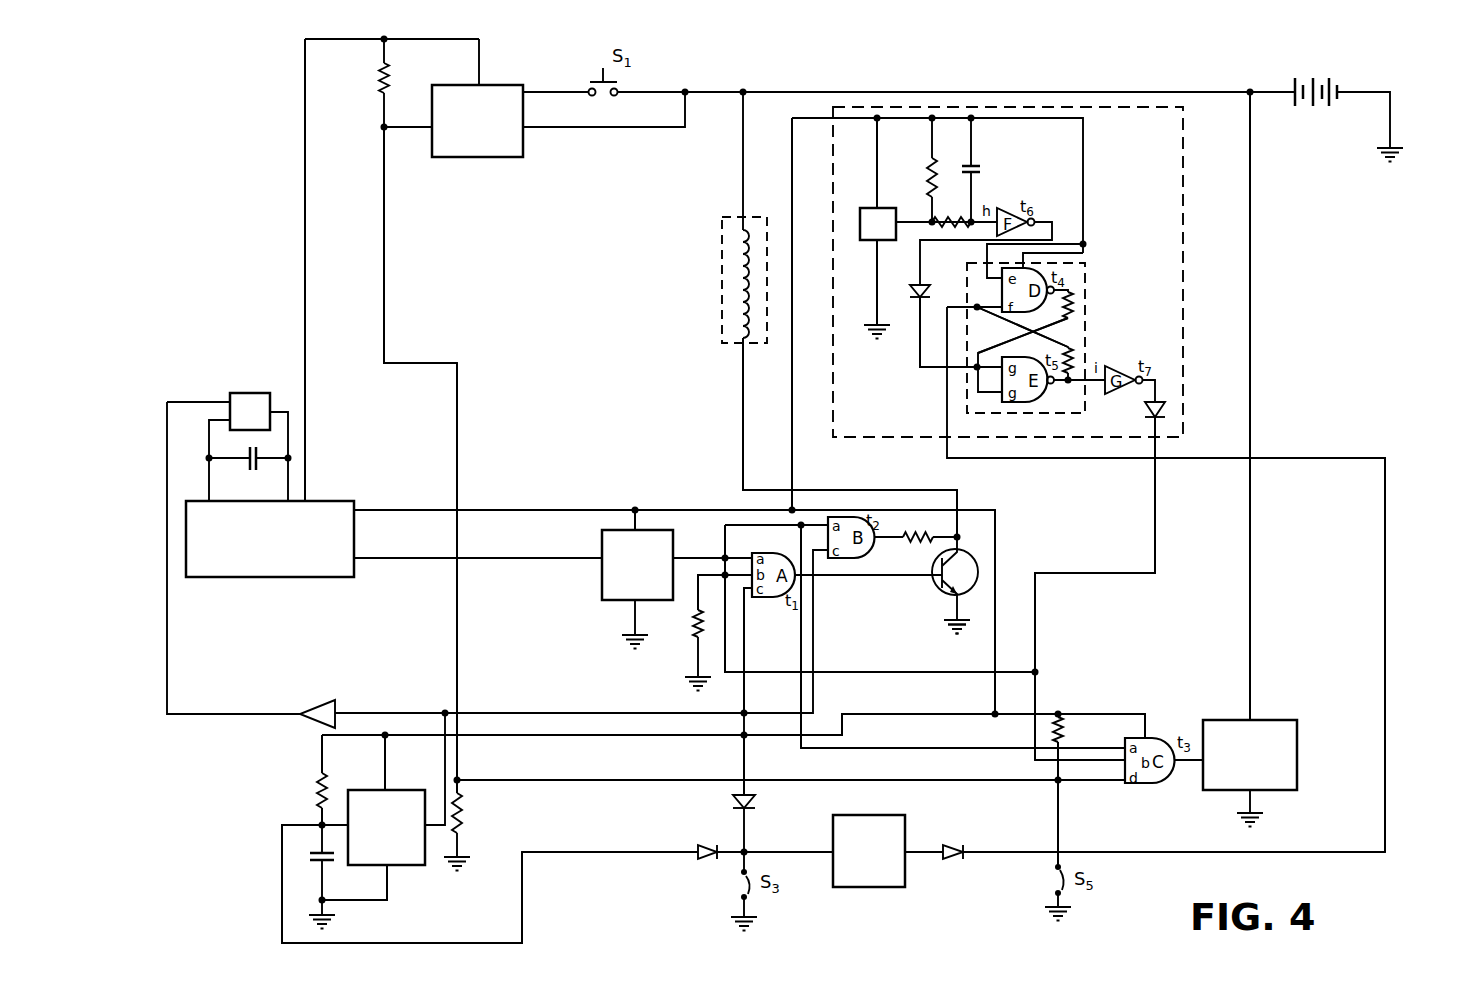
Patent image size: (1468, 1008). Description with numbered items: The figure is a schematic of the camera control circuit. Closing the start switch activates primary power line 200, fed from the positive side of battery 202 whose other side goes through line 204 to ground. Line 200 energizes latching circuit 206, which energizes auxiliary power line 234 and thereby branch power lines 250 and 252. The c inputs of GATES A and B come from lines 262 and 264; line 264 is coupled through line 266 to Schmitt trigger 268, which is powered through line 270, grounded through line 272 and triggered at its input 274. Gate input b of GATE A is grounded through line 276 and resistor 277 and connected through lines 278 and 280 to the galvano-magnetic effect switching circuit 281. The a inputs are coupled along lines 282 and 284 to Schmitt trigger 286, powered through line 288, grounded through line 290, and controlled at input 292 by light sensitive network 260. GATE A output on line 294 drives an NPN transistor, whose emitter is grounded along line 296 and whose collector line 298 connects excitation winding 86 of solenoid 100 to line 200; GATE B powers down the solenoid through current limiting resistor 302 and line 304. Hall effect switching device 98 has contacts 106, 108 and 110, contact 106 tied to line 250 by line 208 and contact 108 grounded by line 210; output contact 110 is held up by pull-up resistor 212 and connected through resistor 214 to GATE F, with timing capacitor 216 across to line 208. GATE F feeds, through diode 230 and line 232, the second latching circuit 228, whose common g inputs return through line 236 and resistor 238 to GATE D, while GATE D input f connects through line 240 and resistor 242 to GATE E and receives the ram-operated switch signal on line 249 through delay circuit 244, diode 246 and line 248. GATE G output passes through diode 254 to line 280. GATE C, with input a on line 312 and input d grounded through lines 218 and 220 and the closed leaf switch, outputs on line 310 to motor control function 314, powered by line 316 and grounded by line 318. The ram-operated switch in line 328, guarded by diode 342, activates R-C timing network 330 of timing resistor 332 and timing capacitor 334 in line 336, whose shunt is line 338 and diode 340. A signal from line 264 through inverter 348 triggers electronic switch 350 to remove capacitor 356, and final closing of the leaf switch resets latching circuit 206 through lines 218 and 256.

The excitation winding 86 is at (743, 300).
The Hall effect switching device 98 is at (860, 222).
The solenoid 100 is at (722, 230).
The input contact 106 is at (877, 192).
The input contact 108 is at (877, 250).
The output contact 110 is at (910, 222).
The primary power line 200 is at (988, 92).
The battery 202 is at (1320, 72).
The line 204 is at (1390, 120).
The latching circuit 206 is at (490, 157).
The interconnecting line 208 is at (792, 380).
The interconnecting line 210 is at (877, 288).
The pull-up resistor 212 is at (930, 166).
The resistor 214 is at (950, 215).
The timing capacitor 216 is at (980, 165).
The line 218 is at (575, 780).
The line 220 is at (1058, 815).
The second latching circuit 228 is at (1094, 289).
The diode 230 is at (928, 288).
The line 232 is at (920, 350).
The auxiliary power line 234 is at (305, 312).
The line 236 is at (1012, 338).
The resistor 238 is at (1076, 302).
The line 240 is at (1060, 343).
The resistor 242 is at (1075, 375).
The delay circuit 244 is at (878, 815).
The diode 246 is at (958, 842).
The interconnecting line 248 is at (1165, 852).
The line 249 is at (787, 850).
The branch power line 250 is at (510, 510).
The branch power line 252 is at (895, 714).
The diode 254 is at (1165, 410).
The line 256 is at (384, 280).
The light sensitive exposure control network 260 is at (268, 577).
The line 262 is at (744, 635).
The line 264 is at (760, 713).
The line 266 is at (457, 768).
The Schmitt trigger 268 is at (380, 788).
The line 270 is at (385, 770).
The line 272 is at (387, 882).
The input 274 is at (336, 823).
The line 276 is at (698, 595).
The resistor 277 is at (693, 640).
The line 278 is at (825, 672).
The line 280 is at (1078, 573).
The galvano-magnetic effect switching circuit 281 is at (1196, 268).
The line 282 is at (745, 525).
The line 284 is at (695, 558).
The Schmitt trigger 286 is at (602, 588).
The line 288 is at (635, 510).
The line 290 is at (624, 628).
The input 292 is at (530, 558).
The line 294 is at (838, 575).
The line 296 is at (957, 608).
The line 298 is at (957, 490).
The current limiting resistor 302 is at (905, 525).
The line 304 is at (935, 545).
The line 310 is at (1183, 765).
The line 312 is at (925, 748).
The motor control function 314 is at (1277, 720).
The line 316 is at (1250, 525).
The line 318 is at (1253, 800).
The line 328 is at (744, 758).
The R-C timing network 330 is at (290, 789).
The timing resistor 332 is at (318, 780).
The timing capacitor 334 is at (308, 862).
The line 336 is at (318, 812).
The line 338 is at (530, 858).
The diode 340 is at (695, 845).
The diode 342 is at (752, 800).
The inverter 348 is at (355, 688).
The electronic switch 350 is at (232, 392).
The capacitor 356 is at (248, 470).